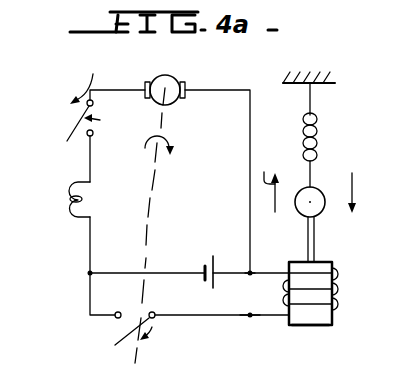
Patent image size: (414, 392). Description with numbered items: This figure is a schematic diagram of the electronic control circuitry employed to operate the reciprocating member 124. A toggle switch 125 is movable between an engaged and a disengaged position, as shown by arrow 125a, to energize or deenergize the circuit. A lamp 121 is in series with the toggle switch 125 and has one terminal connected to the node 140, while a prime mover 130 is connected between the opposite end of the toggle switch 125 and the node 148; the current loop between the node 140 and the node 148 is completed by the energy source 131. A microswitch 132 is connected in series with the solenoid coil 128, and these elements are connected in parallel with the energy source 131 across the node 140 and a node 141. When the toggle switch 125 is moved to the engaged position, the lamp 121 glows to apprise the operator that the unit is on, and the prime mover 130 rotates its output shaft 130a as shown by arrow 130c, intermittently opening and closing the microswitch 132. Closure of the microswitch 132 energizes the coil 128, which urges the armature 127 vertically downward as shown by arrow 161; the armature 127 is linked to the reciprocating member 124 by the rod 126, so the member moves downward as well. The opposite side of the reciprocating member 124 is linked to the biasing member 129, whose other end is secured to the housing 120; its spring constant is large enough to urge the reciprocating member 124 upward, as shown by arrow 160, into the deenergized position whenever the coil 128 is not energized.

The housing 120 is at (326, 84).
The lamp 121 is at (67, 217).
The reciprocating member 124 is at (321, 188).
The toggle switch 125 is at (67, 127).
The arrow 125a is at (73, 86).
The rod 126 is at (319, 242).
The armature 127 is at (310, 326).
The solenoid coil 128 is at (335, 293).
The biasing member 129 is at (318, 137).
The prime mover 130 is at (172, 103).
The output shaft 130a is at (152, 208).
The arrow 130c is at (174, 148).
The energy source 131 is at (218, 249).
The microswitch 132 is at (146, 329).
The node 140 is at (88, 273).
The conductor / junction 141 is at (250, 318).
The node 148 is at (257, 264).
The arrow 160 is at (281, 179).
The arrow 161 is at (356, 187).